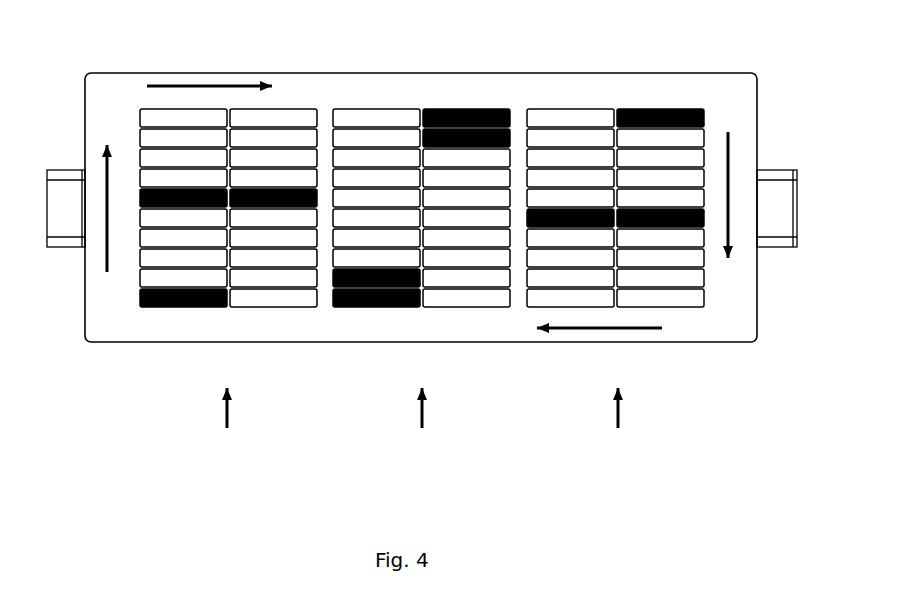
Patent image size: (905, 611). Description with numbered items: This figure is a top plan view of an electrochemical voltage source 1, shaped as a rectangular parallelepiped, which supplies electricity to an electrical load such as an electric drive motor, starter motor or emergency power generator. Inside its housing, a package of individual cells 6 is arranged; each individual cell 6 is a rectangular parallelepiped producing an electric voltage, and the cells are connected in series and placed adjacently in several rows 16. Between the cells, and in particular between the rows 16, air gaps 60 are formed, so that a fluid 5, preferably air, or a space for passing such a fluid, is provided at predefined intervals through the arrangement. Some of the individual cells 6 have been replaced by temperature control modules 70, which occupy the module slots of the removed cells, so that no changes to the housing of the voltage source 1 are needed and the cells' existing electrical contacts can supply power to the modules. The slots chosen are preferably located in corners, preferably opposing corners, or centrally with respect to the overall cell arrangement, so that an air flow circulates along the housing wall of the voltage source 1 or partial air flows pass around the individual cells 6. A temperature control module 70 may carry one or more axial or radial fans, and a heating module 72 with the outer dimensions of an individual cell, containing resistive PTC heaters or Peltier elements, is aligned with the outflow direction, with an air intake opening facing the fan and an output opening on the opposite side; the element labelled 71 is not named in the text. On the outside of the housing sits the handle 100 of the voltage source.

The electrochemical voltage source 1 is at (667, 344).
The fluid 5 is at (210, 82).
The individual cell 6 is at (465, 258).
The row 16 is at (422, 428).
The air gap 60 is at (102, 120).
The temperature control module 70 is at (682, 108).
The first heated cell 71 is at (160, 208).
The heating module 72 is at (267, 208).
The handle of voltage source 100 is at (778, 170).